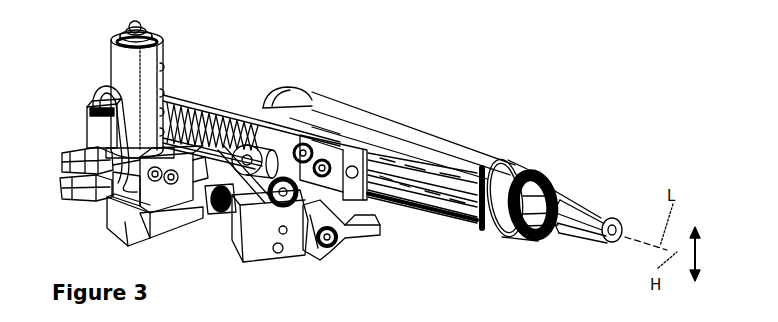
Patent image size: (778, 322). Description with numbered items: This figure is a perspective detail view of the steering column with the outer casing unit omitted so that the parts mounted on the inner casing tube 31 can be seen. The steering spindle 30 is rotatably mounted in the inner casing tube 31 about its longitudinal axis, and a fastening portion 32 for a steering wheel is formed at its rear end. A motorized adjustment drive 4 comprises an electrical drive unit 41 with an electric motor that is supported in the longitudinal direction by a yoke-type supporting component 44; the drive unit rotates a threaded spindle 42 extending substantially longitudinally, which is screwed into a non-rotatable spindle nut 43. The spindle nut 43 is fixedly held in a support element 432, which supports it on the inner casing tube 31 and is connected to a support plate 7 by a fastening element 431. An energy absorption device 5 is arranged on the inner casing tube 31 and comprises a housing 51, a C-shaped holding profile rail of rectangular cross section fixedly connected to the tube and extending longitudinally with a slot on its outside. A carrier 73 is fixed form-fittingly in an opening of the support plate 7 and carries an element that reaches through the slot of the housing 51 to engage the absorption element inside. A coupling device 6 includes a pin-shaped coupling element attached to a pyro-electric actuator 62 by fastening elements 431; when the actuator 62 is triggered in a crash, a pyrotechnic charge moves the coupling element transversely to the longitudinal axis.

The motorized adjustment drive 4 is at (66, 100).
The electrical drive unit 41 is at (120, 67).
The support plate 7 is at (210, 108).
The coupling device 6 is at (258, 130).
The pyro-electric actuator 62 is at (272, 116).
The fastening elements 431 is at (322, 160).
The carrier 73 is at (357, 150).
The energy absorption device 5 is at (390, 158).
The inner casing tube 31 is at (443, 143).
The steering spindle 30 is at (560, 200).
The fastening portion 32 is at (605, 218).
The yoke-type supporting component 44 is at (170, 222).
The threaded spindle 42 is at (222, 218).
The support element 432 is at (262, 232).
The spindle nut 43 is at (342, 239).
The housing 51 is at (447, 212).